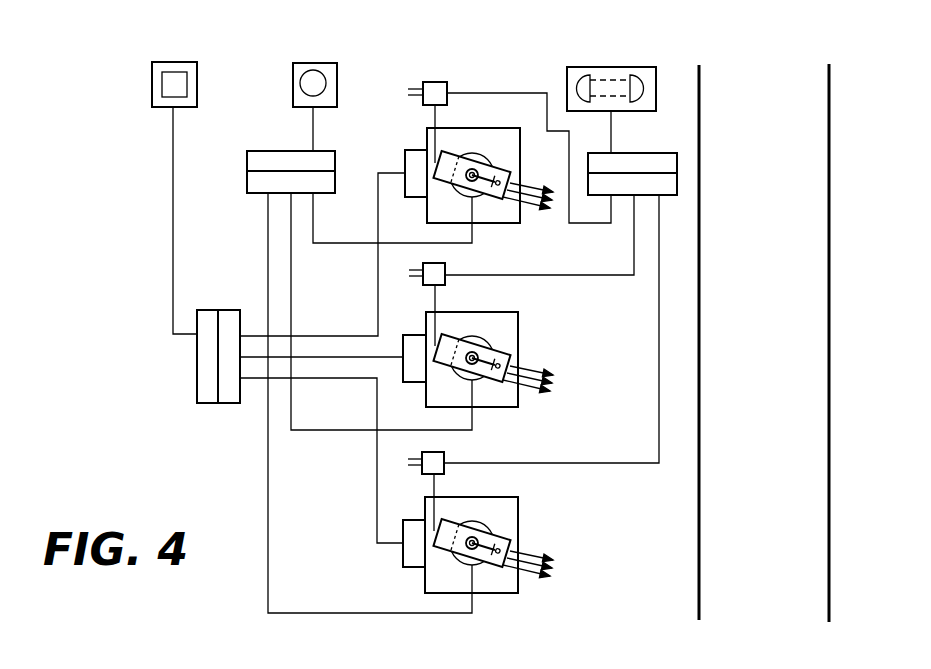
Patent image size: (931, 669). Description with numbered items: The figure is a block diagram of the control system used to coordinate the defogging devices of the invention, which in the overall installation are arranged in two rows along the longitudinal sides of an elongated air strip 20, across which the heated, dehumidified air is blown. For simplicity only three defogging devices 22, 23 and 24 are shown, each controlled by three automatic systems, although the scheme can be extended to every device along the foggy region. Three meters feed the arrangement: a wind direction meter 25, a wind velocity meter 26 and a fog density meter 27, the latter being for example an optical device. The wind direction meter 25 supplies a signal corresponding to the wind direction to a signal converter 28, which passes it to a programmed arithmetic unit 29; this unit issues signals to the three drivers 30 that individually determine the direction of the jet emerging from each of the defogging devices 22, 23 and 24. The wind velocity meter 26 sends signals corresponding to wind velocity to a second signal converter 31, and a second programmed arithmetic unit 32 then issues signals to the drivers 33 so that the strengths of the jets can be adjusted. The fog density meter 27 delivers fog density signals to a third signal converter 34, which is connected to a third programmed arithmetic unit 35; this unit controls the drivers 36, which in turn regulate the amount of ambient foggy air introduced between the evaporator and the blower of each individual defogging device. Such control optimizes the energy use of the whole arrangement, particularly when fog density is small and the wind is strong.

The air strip 20 is at (764, 343).
The defogging device 22 is at (513, 223).
The defogging device 23 is at (500, 398).
The defogging device 24 is at (497, 585).
The wind direction meter 25 is at (337, 85).
The wind velocity meter 26 is at (155, 98).
The fog density meter 27 is at (567, 80).
The signal converter 28 is at (263, 151).
The programmed arithmetic unit 29 is at (255, 193).
The driver 30 is at (453, 190).
The second signal converter 31 is at (193, 388).
The second programmed arithmetic unit 32 is at (227, 400).
The driver 33 is at (410, 150).
The third signal converter 34 is at (675, 128).
The third programmed arithmetic unit 35 is at (668, 196).
The driver 36 is at (437, 90).